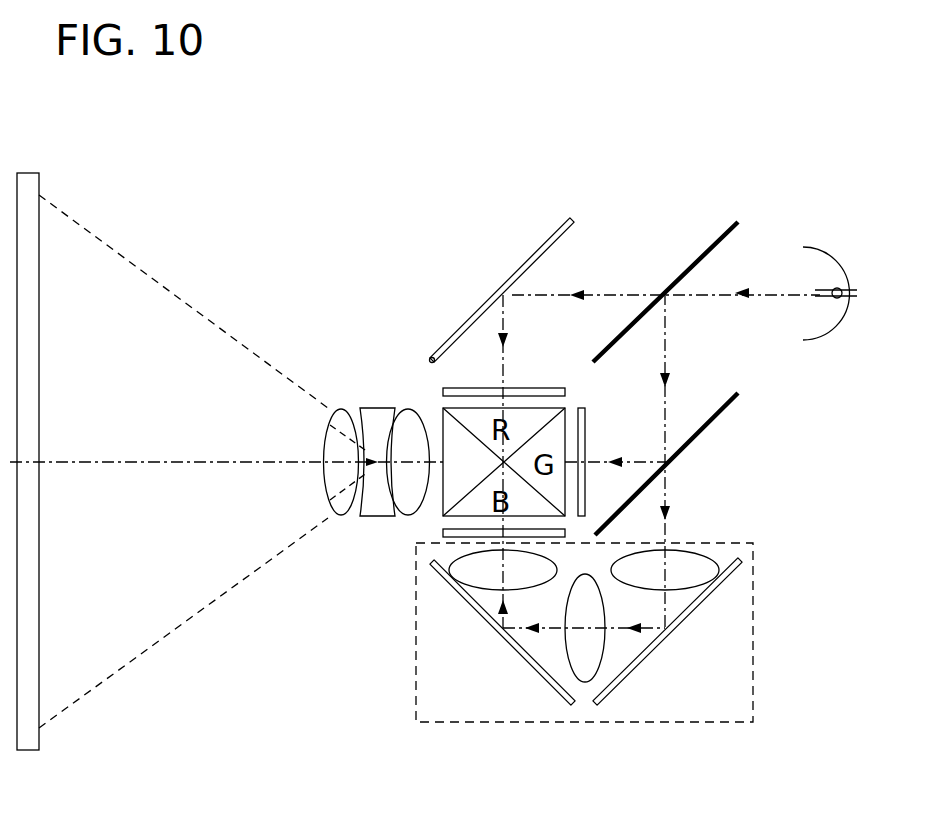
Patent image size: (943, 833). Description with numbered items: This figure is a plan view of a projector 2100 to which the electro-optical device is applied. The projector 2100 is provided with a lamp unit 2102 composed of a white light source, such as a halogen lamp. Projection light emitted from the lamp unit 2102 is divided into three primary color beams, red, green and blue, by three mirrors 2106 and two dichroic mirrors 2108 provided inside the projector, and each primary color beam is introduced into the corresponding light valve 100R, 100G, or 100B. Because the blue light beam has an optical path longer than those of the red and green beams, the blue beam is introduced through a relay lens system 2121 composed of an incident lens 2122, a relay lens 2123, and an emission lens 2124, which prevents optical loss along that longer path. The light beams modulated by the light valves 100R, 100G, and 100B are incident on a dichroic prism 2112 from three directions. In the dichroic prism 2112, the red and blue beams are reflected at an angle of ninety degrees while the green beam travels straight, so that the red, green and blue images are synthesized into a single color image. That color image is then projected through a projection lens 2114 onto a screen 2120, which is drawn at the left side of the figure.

The projector 2100 is at (706, 134).
The lamp unit 2102 is at (833, 287).
The mirror 2106 is at (543, 252).
The dichroic mirror 2108 is at (703, 253).
The dichroic prism 2112 is at (430, 356).
The projection lens 2114 is at (429, 393).
The screen 2120 is at (39, 742).
The relay lens system 2121 is at (753, 610).
The incident lens 2122 is at (690, 582).
The relay lens 2123 is at (597, 665).
The emission lens 2124 is at (477, 577).
The light valve 100R is at (482, 388).
The light valve 100G is at (623, 400).
The light valve 100B is at (443, 533).